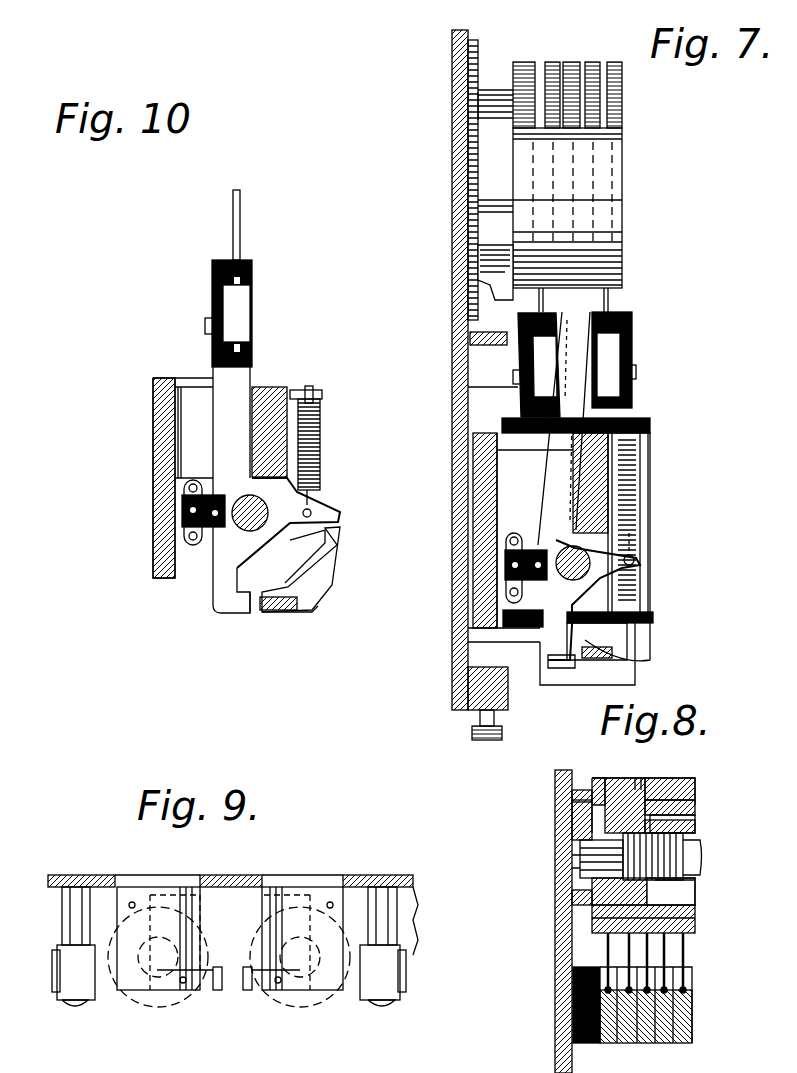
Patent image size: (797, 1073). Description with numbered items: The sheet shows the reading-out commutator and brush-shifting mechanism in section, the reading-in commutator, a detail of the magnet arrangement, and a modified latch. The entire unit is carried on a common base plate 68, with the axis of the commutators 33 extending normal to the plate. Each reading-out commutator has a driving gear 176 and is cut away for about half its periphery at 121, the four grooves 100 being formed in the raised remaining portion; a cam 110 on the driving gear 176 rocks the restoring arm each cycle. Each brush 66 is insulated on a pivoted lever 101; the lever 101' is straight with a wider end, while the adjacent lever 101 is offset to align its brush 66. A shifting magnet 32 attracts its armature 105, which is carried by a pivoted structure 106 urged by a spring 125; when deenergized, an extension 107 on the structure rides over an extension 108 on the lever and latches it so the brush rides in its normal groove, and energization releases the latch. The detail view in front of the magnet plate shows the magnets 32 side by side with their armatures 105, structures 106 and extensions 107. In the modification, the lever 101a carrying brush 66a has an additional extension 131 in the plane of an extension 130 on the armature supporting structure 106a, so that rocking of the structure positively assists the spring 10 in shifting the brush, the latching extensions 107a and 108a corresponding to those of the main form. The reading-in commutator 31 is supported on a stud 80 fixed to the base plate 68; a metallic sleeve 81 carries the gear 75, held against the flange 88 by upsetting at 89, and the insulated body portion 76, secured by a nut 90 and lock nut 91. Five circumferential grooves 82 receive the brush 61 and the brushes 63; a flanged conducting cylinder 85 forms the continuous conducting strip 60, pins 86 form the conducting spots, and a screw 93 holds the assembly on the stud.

In FIG. 7, the base plate 68 is at (455, 116).
In FIG. 9, the base plate 68 is at (370, 875).
In FIG. 8, the base plate 68 is at (558, 886).
In FIG. 7, the driving gear 176 is at (480, 48).
In FIG. 7, the commutators 33 is at (620, 189).
In FIG. 7, the cut-away portion 121 is at (607, 152).
In FIG. 7, the grooves 100 is at (606, 58).
In FIG. 7, the cam 110 is at (473, 275).
In FIG. 7, the brush 66 is at (545, 305).
In FIG. 7, the lever 101' is at (611, 364).
In FIG. 7, the pivoted lever 101 is at (499, 428).
In FIG. 7, the spring 125 is at (645, 508).
In FIG. 7, the magnet 32 is at (650, 585).
In FIG. 9, the magnet 32 is at (172, 1000).
In FIG. 7, the pivoted structure 106 is at (620, 668).
In FIG. 9, the pivoted structure 106 is at (105, 1000).
In FIG. 7, the extension 108 is at (575, 668).
In FIG. 10, the brush 66a is at (240, 235).
In FIG. 10, the lever 101a is at (252, 378).
In FIG. 10, the spring 10 is at (322, 455).
In FIG. 10, the extension 131 is at (342, 515).
In FIG. 10, the extension 130 is at (340, 540).
In FIG. 10, the armature supporting structure 106a is at (315, 609).
In FIG. 10, the extension 107a is at (270, 610).
In FIG. 10, the extension 108a is at (251, 608).
In FIG. 9, the armature 105 is at (140, 985).
In FIG. 9, the extension 107 is at (246, 965).
In FIG. 8, the brush 61 is at (600, 950).
In FIG. 8, the brush 63 is at (683, 958).
In FIG. 8, the pins 86 is at (695, 922).
In FIG. 8, the flange 88 is at (592, 898).
In FIG. 8, the screw 93 is at (685, 873).
In FIG. 8, the lock nut 91 is at (698, 838).
In FIG. 8, the stud 80 is at (590, 852).
In FIG. 8, the metallic sleeve 81 is at (585, 820).
In FIG. 8, the upset portion 89 is at (572, 800).
In FIG. 8, the gear 75 is at (605, 800).
In FIG. 8, the continuous conducting strip 60 is at (618, 800).
In FIG. 8, the reading-in commutator 31 is at (622, 790).
In FIG. 8, the insulated body portion 76 is at (640, 790).
In FIG. 8, the circumferential grooves 82 is at (680, 775).
In FIG. 8, the flanged conducting cylinder 85 is at (690, 793).
In FIG. 8, the nut 90 is at (690, 820).